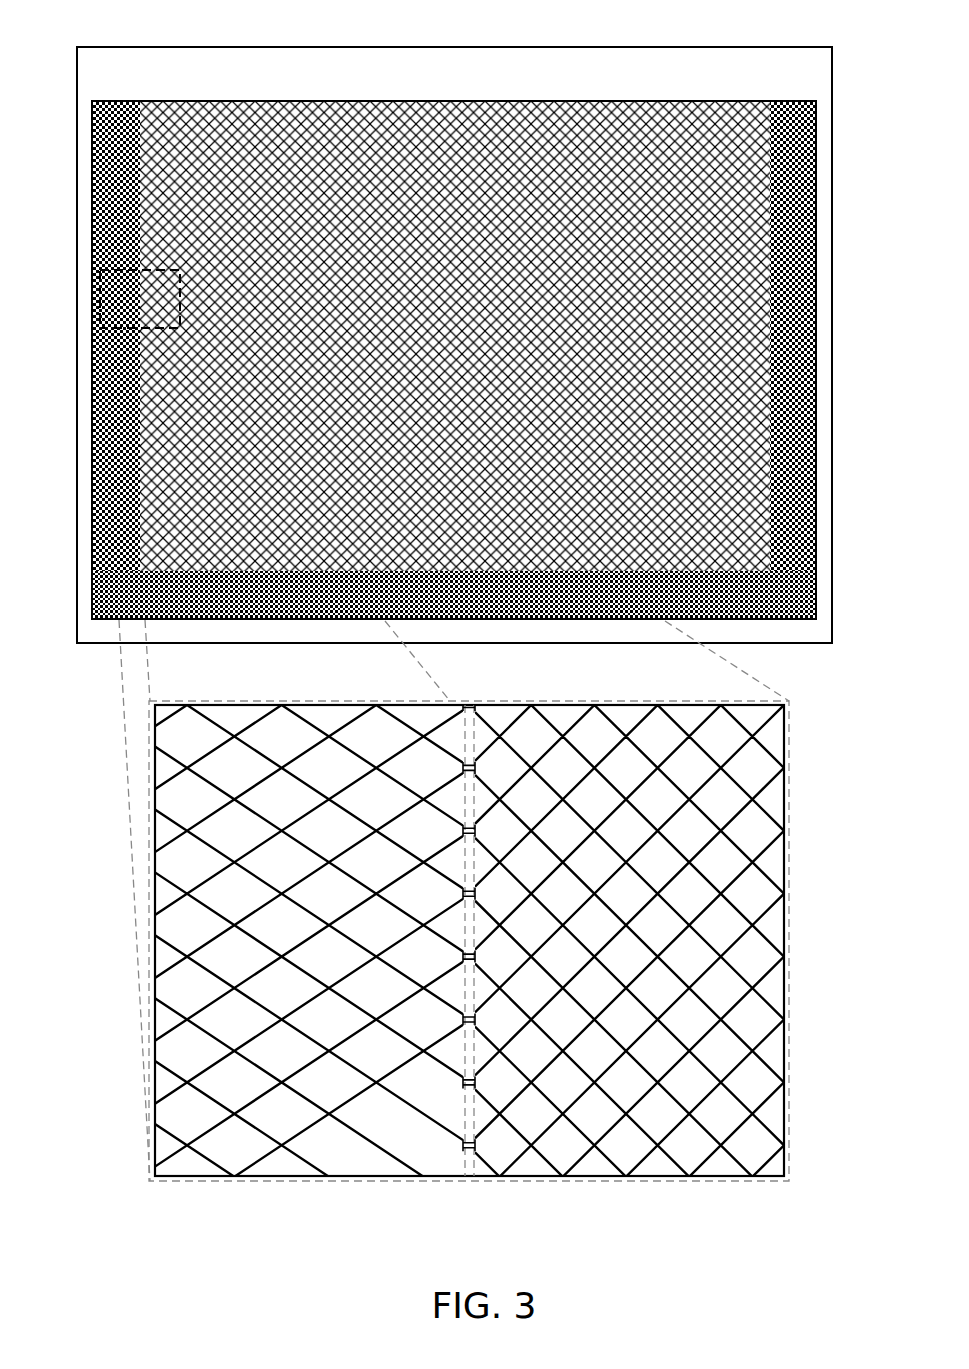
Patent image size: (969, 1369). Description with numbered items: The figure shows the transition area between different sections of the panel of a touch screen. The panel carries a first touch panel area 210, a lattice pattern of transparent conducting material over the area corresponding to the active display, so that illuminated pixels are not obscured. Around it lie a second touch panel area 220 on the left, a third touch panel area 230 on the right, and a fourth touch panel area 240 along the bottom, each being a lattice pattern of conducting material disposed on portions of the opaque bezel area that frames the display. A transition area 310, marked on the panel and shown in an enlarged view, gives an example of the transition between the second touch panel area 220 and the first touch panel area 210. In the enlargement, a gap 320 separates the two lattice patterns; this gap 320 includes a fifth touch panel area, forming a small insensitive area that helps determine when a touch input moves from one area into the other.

The first touch panel area 210 is at (471, 104).
The second touch panel area 220 is at (106, 236).
The third touch panel area 230 is at (803, 313).
The fourth touch panel area 240 is at (462, 604).
The transition area 310 is at (102, 291).
The gap 320 is at (470, 1178).